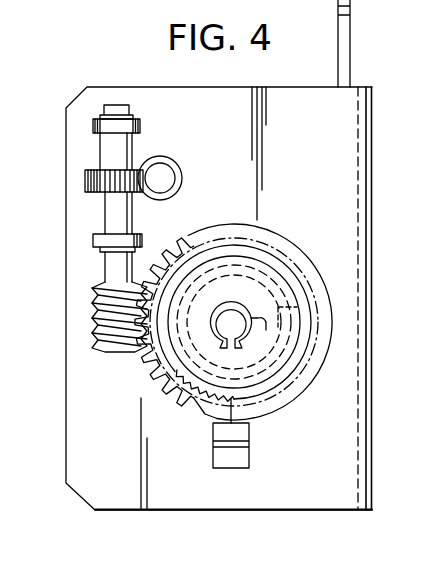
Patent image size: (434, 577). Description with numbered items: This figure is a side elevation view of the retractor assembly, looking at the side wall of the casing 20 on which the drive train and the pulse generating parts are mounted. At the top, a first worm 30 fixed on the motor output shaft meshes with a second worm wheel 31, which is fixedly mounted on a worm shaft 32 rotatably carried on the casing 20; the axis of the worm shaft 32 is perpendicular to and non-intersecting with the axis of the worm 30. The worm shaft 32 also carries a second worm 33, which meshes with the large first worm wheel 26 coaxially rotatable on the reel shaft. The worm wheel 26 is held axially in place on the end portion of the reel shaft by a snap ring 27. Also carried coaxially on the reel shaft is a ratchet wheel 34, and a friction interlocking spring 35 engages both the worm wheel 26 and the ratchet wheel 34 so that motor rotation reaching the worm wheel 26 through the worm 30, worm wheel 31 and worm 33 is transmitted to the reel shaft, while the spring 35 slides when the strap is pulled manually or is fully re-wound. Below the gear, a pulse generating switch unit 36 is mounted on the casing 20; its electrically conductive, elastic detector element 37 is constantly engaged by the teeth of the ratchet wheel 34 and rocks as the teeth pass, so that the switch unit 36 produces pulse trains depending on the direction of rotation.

The casing 20 is at (296, 86).
The first worm wheel 26 is at (148, 366).
The snap ring 27 is at (242, 330).
The first worm 30 is at (178, 162).
The second worm wheel 31 is at (85, 180).
The worm shaft 32 is at (103, 209).
The second worm 33 is at (92, 306).
The ratchet wheel 34 is at (268, 398).
The friction interlocking spring 35 is at (297, 307).
The pulse generating switch unit 36 is at (250, 450).
The detector element 37 is at (220, 420).